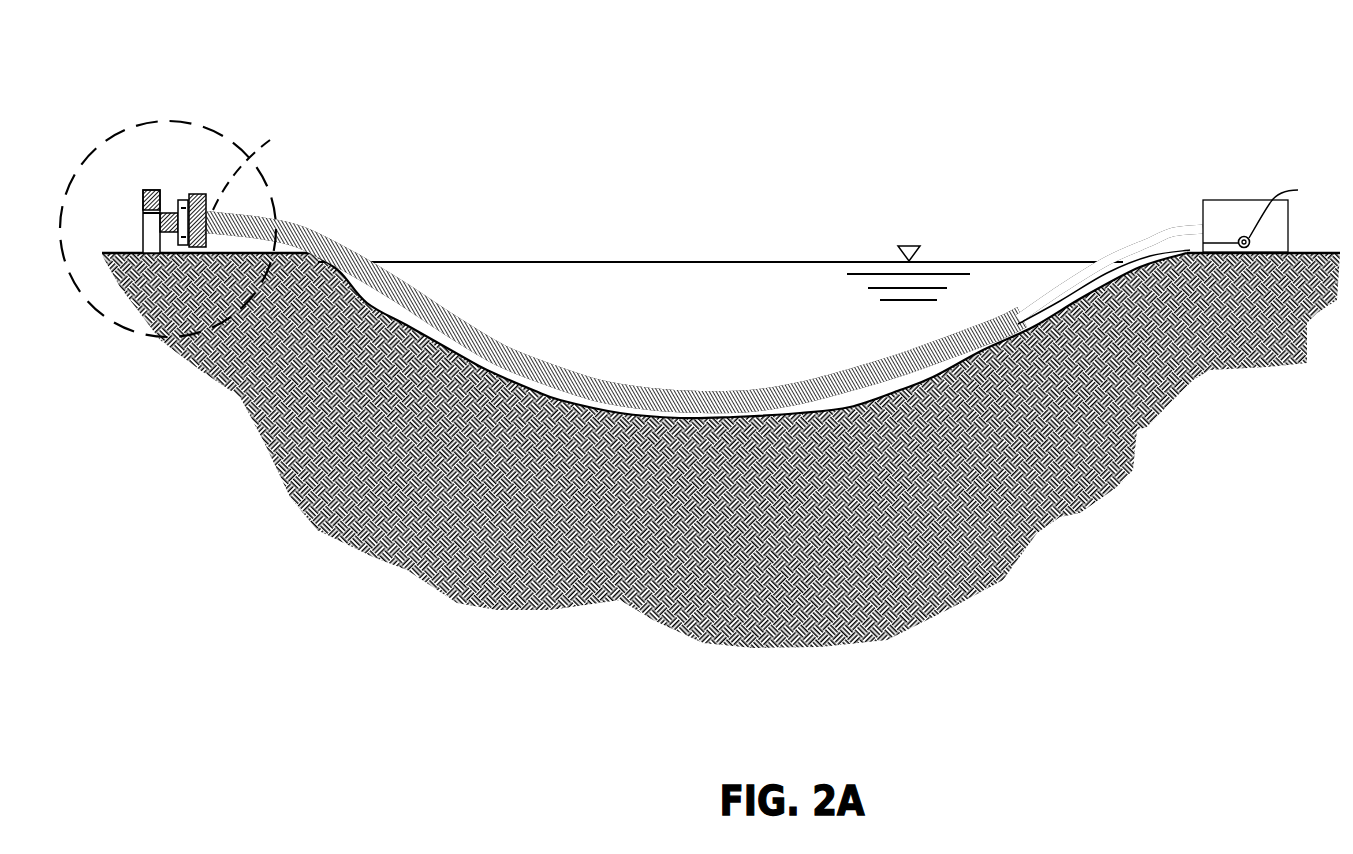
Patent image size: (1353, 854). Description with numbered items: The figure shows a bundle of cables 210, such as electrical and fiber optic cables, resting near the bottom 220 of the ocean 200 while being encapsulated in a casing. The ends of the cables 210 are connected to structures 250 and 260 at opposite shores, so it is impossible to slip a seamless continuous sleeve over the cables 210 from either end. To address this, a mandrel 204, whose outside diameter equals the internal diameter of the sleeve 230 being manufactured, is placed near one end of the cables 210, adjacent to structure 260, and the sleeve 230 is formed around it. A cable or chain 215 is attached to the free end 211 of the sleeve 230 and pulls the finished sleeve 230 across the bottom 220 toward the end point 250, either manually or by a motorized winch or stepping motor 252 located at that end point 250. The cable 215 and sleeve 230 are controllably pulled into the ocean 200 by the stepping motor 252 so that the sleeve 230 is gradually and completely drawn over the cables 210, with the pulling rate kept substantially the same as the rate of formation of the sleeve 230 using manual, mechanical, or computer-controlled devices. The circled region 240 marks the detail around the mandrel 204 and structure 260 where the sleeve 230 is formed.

The ocean 200 is at (688, 262).
The mandrel 204 is at (276, 139).
The bundle of cables 210 is at (1057, 288).
The free end 211 is at (1017, 308).
The cable or chain 215 is at (1085, 283).
The bottom 220 is at (556, 395).
The sleeve 230 is at (403, 293).
The detail circle 240 is at (152, 90).
The structure 250 is at (1212, 215).
The stepping motor 252 is at (1245, 228).
The structure 260 is at (143, 229).